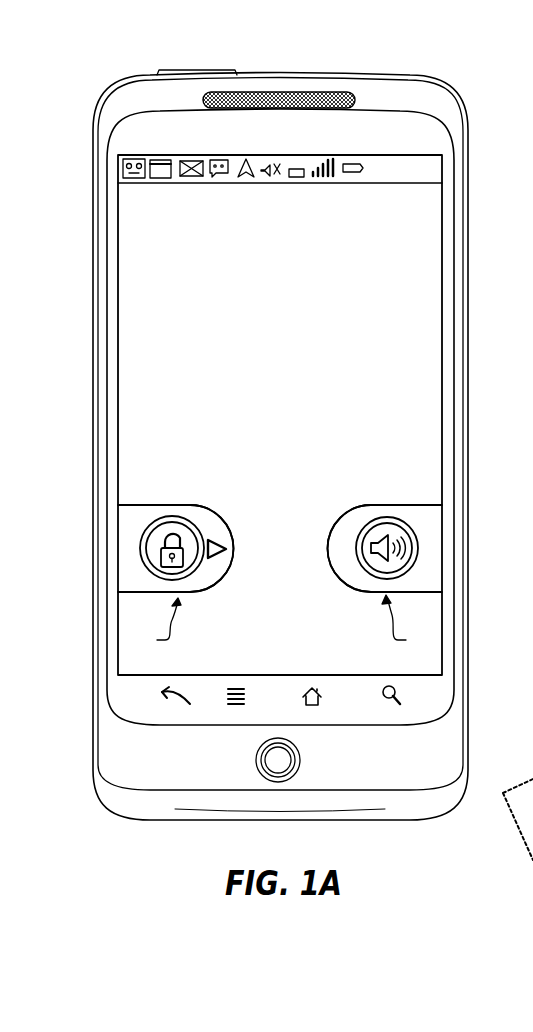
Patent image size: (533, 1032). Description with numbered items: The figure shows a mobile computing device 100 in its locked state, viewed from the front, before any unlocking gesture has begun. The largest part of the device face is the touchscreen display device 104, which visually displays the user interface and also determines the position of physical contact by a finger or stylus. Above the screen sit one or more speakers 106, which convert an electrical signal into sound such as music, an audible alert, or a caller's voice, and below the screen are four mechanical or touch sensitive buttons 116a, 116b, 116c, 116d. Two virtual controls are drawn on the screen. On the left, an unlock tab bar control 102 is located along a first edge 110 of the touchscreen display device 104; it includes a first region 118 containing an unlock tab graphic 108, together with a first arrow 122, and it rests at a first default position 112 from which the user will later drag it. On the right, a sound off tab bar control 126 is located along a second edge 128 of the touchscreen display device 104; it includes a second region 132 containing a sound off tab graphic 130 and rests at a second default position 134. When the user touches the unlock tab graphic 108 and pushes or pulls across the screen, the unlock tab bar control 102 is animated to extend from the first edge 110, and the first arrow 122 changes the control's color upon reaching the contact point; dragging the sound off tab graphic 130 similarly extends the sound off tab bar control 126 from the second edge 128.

The mobile computing device 100 is at (113, 99).
The unlock tab bar control 102 is at (226, 531).
The touchscreen display device 104 is at (441, 207).
The speakers 106 is at (310, 93).
The unlock tab graphic 108 is at (172, 530).
The first edge 110 is at (118, 550).
The first default position 112 is at (154, 627).
The button 116a is at (178, 709).
The button 116b is at (238, 714).
The button 116c is at (313, 708).
The button 116d is at (398, 710).
The first region 118 is at (186, 575).
The first arrow 122 is at (226, 552).
The sound off tab bar control 126 is at (361, 592).
The second edge 128 is at (442, 553).
The sound off tab graphic 130 is at (388, 530).
The second region 132 is at (358, 562).
The second default position 134 is at (410, 624).